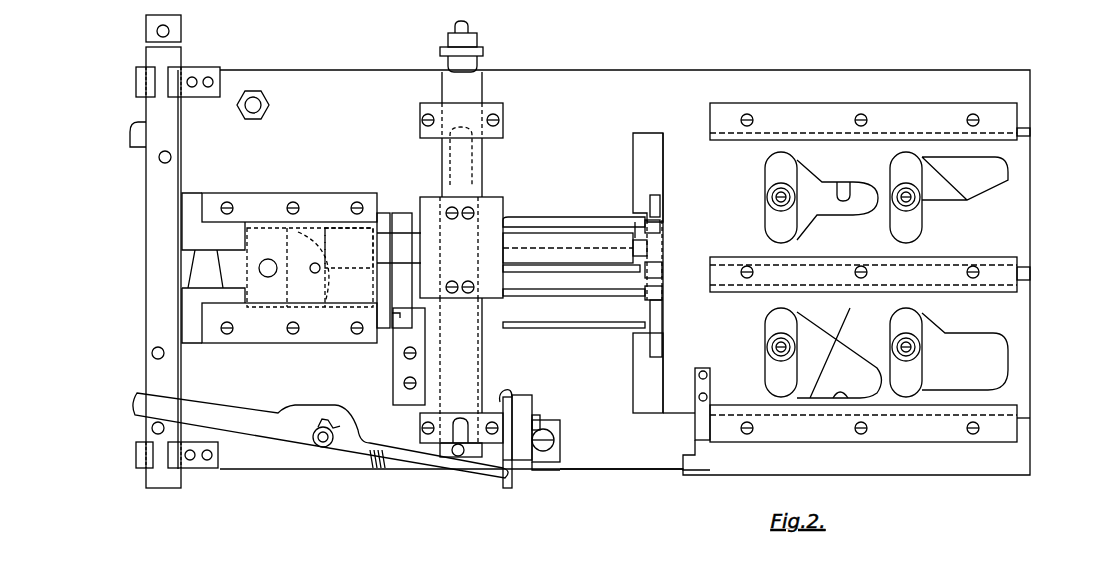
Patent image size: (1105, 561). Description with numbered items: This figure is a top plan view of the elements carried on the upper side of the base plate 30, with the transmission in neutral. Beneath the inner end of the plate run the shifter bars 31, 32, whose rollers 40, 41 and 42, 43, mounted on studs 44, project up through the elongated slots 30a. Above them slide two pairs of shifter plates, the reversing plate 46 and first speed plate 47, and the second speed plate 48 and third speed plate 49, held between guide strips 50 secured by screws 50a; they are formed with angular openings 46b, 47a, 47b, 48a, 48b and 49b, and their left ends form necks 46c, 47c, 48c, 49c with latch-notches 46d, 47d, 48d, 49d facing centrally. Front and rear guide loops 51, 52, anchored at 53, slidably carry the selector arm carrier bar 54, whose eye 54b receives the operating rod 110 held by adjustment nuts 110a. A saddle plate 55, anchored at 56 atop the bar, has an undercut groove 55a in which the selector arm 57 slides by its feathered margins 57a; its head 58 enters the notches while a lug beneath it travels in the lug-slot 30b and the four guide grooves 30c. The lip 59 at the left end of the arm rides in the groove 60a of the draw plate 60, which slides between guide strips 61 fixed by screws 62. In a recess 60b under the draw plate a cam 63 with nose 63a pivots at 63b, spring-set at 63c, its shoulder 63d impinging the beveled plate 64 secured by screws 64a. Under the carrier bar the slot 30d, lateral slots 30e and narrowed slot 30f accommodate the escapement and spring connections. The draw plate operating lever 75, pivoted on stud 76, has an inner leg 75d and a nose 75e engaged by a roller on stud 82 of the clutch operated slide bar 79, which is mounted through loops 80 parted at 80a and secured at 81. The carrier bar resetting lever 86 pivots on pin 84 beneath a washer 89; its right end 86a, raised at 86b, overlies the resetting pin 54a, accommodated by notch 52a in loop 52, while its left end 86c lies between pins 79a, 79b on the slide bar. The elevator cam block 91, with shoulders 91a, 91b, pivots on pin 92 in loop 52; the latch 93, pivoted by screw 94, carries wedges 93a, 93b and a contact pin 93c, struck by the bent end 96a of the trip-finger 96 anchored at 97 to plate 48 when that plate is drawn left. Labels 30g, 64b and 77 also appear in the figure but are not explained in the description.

The base plate 30 is at (340, 69).
The elongated slots 30a is at (792, 185).
The lug-slot 30b is at (662, 208).
The guide grooves 30c is at (634, 218).
The elongated slot 30d is at (490, 380).
The lateral slots 30e is at (425, 183).
The narrowed slot 30f is at (450, 153).
The opening 30g is at (202, 250).
The shifter bar 31 is at (910, 232).
The shifter bar 32 is at (775, 222).
The roller 40 is at (897, 172).
The roller 41 is at (895, 345).
The roller 42 is at (768, 197).
The roller 43 is at (770, 347).
The studs 44 is at (795, 197).
The reversing plate 46 is at (648, 130).
The angular opening 46b is at (960, 192).
The neck 46c is at (648, 152).
The latch-notch 46d is at (662, 195).
The first speed plate 47 is at (700, 130).
The angular opening 47a is at (843, 182).
The angular opening 47b is at (1003, 170).
The neck 47c is at (666, 250).
The latch-notch 47d is at (662, 250).
The second speed plate 48 is at (1020, 320).
The angular opening 48a is at (982, 362).
The angular opening 48b is at (840, 392).
The neck 48c is at (664, 293).
The latch-notch 48d is at (645, 292).
The third speed plate 49 is at (632, 385).
The angular opening 49b is at (828, 355).
The neck 49c is at (646, 396).
The latch-notch 49d is at (662, 362).
The guide strips 50 is at (760, 103).
The screws 50a is at (752, 118).
The front guide loop 51 is at (493, 103).
The rear guide loop 52 is at (420, 428).
The notch 52a is at (460, 418).
The anchor fastenings 53 is at (424, 118).
The selector arm carrier bar 54 is at (440, 85).
The resetting pin 54a is at (457, 457).
The eye 54b is at (447, 52).
The saddle plate 55 is at (490, 196).
The undercut guide channel 55a is at (490, 232).
The anchor fastening 56 is at (466, 208).
The shifter plate selector arm 57 is at (574, 232).
The feathered margins 57a is at (550, 220).
The head 58 is at (665, 270).
The down turned lip 59 is at (393, 249).
The selector arm draw plate 60 is at (278, 232).
The groove 60a is at (384, 220).
The recess 60b is at (292, 307).
The guide strips 61 is at (250, 190).
The rivets or screws 62 is at (223, 192).
The flat ovate cam 63 is at (300, 280).
The nose 63a is at (384, 272).
The pivot 63b is at (315, 263).
The spring 63c is at (303, 303).
The rounded shoulder 63d is at (364, 286).
The beveled plate 64 is at (392, 383).
The screws 64a is at (428, 372).
The bracket arm 64b is at (396, 277).
The draw plate operating lever 75 is at (190, 258).
The inner leg 75d is at (234, 258).
The nose 75e is at (130, 135).
The stud 76 is at (262, 105).
The hole 77 is at (259, 268).
The clutch operated slide bar 79 is at (152, 490).
The pin 79a is at (152, 354).
The pin 79b is at (152, 428).
The loops 80 is at (135, 77).
The parting 80a is at (166, 77).
The fastenings 81 is at (193, 78).
The stud 82 is at (159, 157).
The pin 84 is at (323, 447).
The carrier bar resetting lever 86 is at (420, 478).
The inner end 86a is at (503, 478).
The raised portion 86b is at (374, 468).
The outer end 86c is at (137, 403).
The washer 89 is at (313, 436).
The elevator cam block 91 is at (515, 458).
The upper shoulder 91a is at (516, 415).
The lower shoulder 91b is at (508, 486).
The pin 92 is at (540, 430).
The wedge latch 93 is at (557, 440).
The forward wedge 93a is at (515, 396).
The rear wedge 93b is at (532, 478).
The contact pin 93c is at (562, 468).
The screw 94 is at (565, 443).
The trip-finger 96 is at (694, 431).
The bent-down end 96a is at (700, 445).
The anchorage 97 is at (699, 395).
The operating rod 110 is at (466, 25).
The adjustment nuts 110a is at (478, 62).